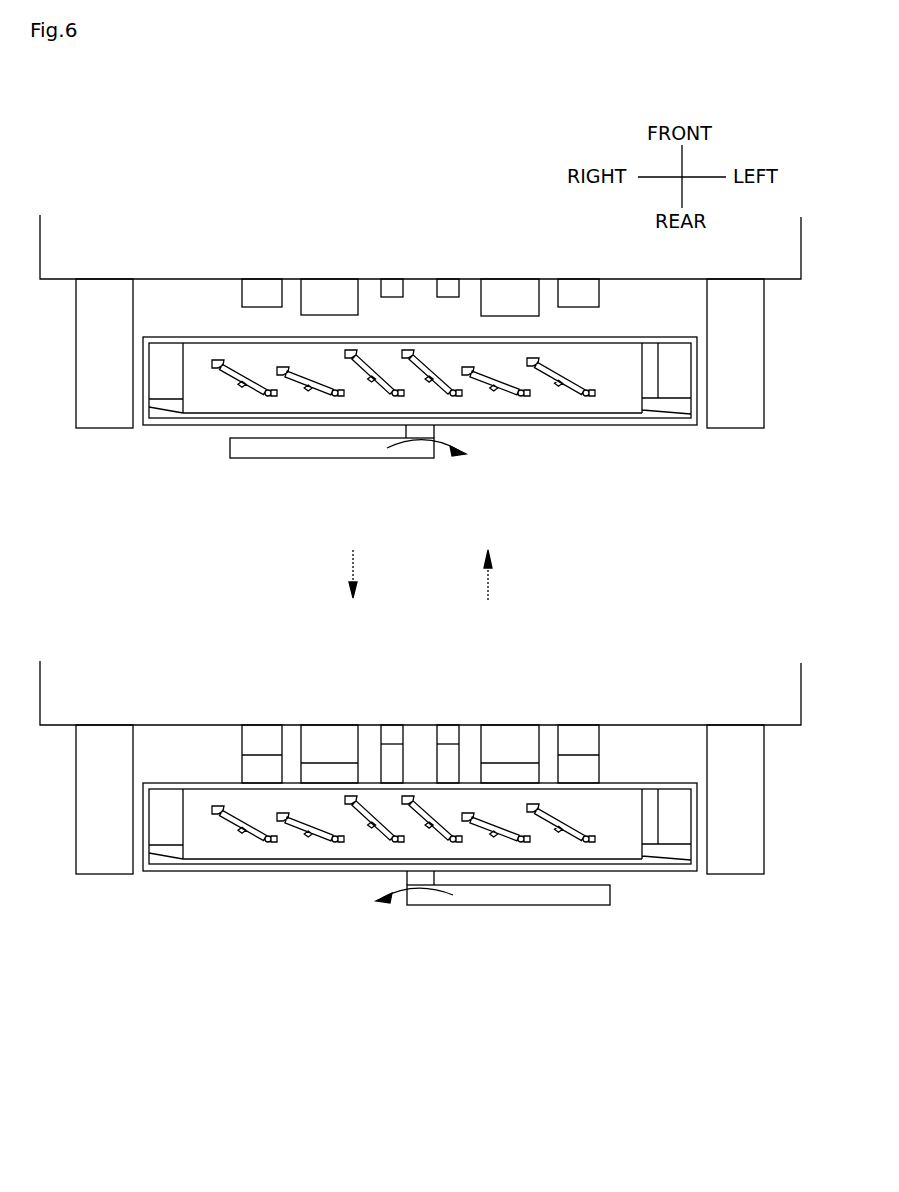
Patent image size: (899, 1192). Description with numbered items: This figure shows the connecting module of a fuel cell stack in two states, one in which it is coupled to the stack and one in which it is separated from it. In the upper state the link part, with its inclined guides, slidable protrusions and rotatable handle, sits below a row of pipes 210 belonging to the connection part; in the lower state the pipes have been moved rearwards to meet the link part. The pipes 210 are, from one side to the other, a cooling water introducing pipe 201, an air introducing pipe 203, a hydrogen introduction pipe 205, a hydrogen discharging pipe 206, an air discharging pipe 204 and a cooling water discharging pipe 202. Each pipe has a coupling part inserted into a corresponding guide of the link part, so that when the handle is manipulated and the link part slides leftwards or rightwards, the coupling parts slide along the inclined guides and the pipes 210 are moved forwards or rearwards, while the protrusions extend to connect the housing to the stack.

The pipe 210 is at (328, 287).
The cooling water introducing pipe 201 is at (260, 768).
The cooling water discharging pipe 202 is at (578, 765).
The air introducing pipe 203 is at (330, 770).
The air discharging pipe 204 is at (510, 770).
The hydrogen introduction pipe 205 is at (393, 765).
The hydrogen discharging pipe 206 is at (447, 765).